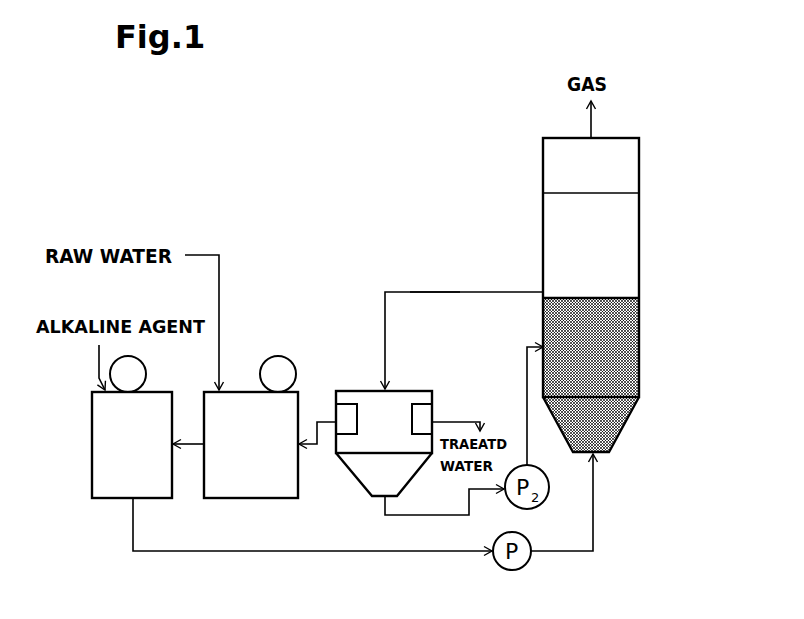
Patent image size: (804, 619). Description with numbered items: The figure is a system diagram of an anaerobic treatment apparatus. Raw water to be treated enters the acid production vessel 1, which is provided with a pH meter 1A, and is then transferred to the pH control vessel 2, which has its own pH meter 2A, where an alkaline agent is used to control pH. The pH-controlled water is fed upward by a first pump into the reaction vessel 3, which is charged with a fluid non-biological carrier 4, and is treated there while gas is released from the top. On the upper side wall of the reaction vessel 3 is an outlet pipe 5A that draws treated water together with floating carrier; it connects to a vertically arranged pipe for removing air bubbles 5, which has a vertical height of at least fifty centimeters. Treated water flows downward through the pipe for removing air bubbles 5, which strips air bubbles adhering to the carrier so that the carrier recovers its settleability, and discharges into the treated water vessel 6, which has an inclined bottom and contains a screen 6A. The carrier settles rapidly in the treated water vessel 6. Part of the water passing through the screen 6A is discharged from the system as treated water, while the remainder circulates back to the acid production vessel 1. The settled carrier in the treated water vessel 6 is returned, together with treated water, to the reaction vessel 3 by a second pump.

The acid production vessel 1 is at (215, 500).
The pH meter 1A is at (273, 357).
The pH control vessel 2 is at (91, 445).
The pH meter 2A is at (134, 362).
The reaction vessel 3 is at (640, 233).
The fluid non-biological carrier 4 is at (630, 366).
The pipe for removing air bubbles 5 is at (383, 320).
The outlet pipe 5A is at (427, 291).
The treated water vessel 6 is at (351, 472).
The screen 6A is at (338, 412).